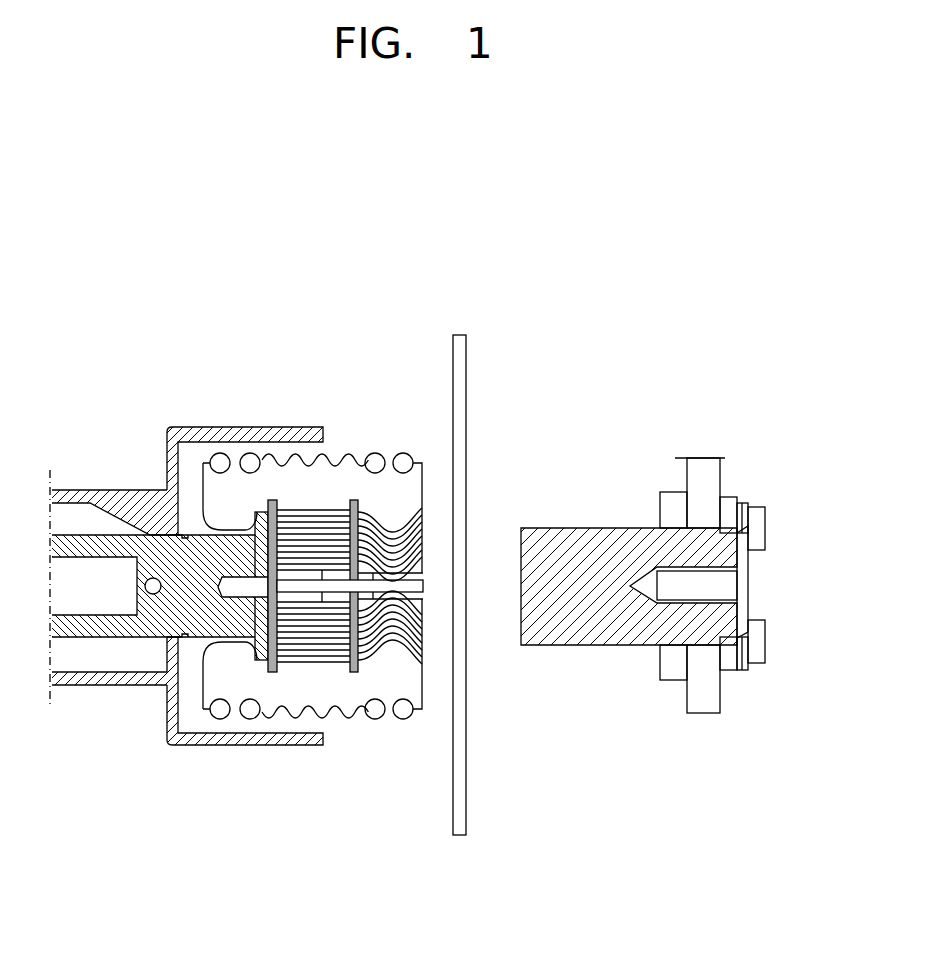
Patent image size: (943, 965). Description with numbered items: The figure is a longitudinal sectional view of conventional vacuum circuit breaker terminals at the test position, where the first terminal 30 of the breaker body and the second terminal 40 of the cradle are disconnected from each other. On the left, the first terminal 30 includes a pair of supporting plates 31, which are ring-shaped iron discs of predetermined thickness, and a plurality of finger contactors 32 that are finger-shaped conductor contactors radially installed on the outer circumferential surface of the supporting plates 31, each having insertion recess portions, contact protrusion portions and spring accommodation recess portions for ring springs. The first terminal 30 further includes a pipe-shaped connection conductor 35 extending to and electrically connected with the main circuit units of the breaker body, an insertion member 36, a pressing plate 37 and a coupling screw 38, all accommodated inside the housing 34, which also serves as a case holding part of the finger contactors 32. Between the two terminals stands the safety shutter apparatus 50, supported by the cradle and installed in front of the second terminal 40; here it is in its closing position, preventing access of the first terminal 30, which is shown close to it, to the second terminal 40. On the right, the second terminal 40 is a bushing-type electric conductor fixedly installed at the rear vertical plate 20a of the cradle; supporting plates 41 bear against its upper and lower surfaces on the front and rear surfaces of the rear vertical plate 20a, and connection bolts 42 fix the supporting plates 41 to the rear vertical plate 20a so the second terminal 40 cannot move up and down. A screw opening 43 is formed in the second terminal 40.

The first terminal 30 is at (236, 572).
The supporting plates 31 is at (279, 668).
The finger contactors 32 is at (329, 686).
The housing 34 is at (190, 746).
The connection conductor 35 is at (74, 642).
The insertion member 36 is at (150, 606).
The pressing plate 37 is at (261, 662).
The coupling screw 38 is at (243, 593).
The second terminal 40 is at (590, 552).
The supporting plates 41 is at (667, 672).
The connection bolts 42 is at (757, 650).
The screw opening 43 is at (718, 585).
The safety shutter apparatus 50 is at (460, 359).
The rear vertical plate 20a is at (707, 482).